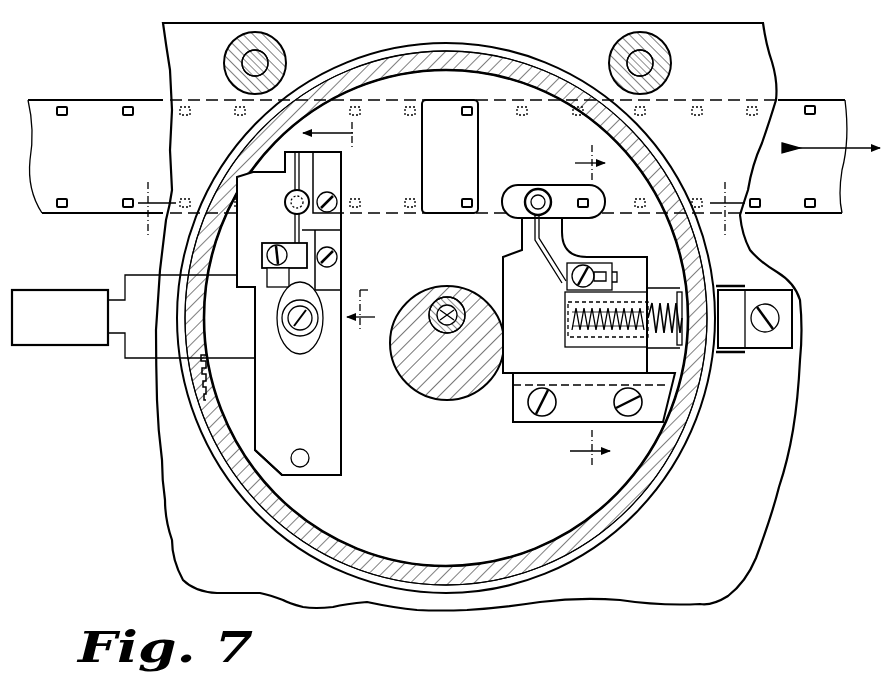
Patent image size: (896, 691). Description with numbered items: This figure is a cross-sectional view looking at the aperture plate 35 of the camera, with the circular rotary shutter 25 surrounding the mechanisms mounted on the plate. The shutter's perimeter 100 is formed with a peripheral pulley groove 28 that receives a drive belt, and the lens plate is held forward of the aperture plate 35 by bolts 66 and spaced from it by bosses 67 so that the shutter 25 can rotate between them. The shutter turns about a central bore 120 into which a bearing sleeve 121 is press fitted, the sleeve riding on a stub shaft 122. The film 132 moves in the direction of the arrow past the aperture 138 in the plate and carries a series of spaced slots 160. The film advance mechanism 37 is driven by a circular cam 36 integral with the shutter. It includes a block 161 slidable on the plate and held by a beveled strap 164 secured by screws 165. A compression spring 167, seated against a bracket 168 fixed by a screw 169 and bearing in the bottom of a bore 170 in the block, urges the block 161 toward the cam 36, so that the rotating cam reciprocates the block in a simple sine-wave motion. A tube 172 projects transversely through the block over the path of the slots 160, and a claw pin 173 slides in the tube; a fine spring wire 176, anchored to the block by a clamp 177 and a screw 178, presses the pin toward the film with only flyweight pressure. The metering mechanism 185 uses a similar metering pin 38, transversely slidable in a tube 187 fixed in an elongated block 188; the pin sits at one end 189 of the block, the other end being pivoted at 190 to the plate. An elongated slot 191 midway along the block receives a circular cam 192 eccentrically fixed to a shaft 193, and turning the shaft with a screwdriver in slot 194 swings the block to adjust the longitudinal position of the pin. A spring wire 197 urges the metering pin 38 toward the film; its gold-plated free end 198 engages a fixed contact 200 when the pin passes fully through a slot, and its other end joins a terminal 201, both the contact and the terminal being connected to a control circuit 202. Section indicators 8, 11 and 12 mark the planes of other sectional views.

The aperture plate 35 is at (740, 44).
The slots 160 is at (800, 114).
The film 132 is at (797, 100).
The bosses 67 is at (245, 40).
The bolts 66 is at (252, 66).
The perimeter 100 is at (668, 470).
The circular shutter 25 is at (612, 520).
The peripheral pulley groove 28 is at (200, 402).
The control circuit 202 is at (95, 290).
The end of block 189 is at (283, 180).
The block 188 is at (323, 398).
The free end of spring wire 198 is at (292, 152).
The fixed contact 200 is at (300, 178).
The metering pin 38 is at (302, 192).
The tube 187 is at (290, 207).
The terminal 201 is at (290, 248).
The spring wire 197 is at (326, 233).
The metering mechanism 185 is at (372, 234).
The circular cam 192 is at (288, 307).
The shaft 193 is at (288, 320).
The elongated slot 191 is at (292, 352).
The slot 194 is at (290, 345).
The pivot 190 is at (302, 466).
The section line 11- 11 is at (339, 240).
The section line 12- 12 is at (582, 319).
The section line 8- 8 is at (441, 200).
The aperture 138 is at (479, 136).
The cam 36 is at (450, 400).
The film advance mechanism 37 is at (502, 410).
The central bore 120 is at (452, 298).
The bearing sleeve 121 is at (440, 312).
The stub shaft 122 is at (466, 318).
The block 161 is at (575, 295).
The claw pin 173 is at (550, 192).
The tube 172 is at (535, 196).
The spring wire 176 is at (545, 231).
The screw 178 is at (590, 272).
The clamp 177 is at (568, 282).
The bore 170 is at (586, 340).
The compression spring 167 is at (660, 300).
The bracket 168 is at (718, 293).
The screw 169 is at (772, 330).
The beveled strap 164 is at (558, 415).
The screws 165 is at (614, 402).